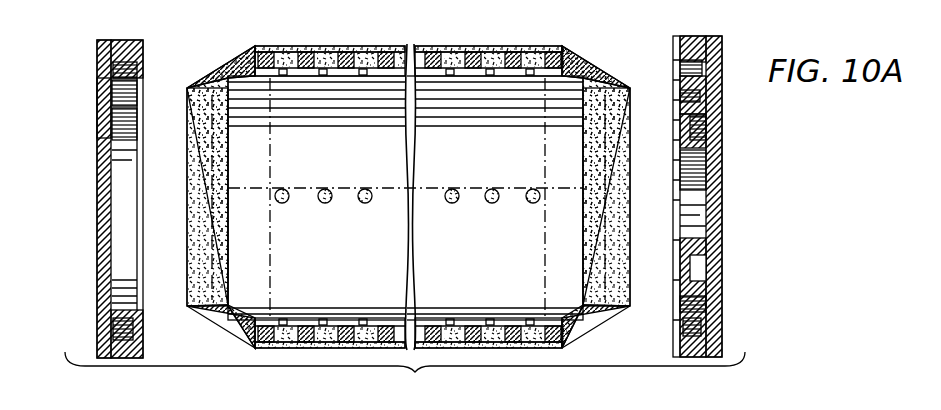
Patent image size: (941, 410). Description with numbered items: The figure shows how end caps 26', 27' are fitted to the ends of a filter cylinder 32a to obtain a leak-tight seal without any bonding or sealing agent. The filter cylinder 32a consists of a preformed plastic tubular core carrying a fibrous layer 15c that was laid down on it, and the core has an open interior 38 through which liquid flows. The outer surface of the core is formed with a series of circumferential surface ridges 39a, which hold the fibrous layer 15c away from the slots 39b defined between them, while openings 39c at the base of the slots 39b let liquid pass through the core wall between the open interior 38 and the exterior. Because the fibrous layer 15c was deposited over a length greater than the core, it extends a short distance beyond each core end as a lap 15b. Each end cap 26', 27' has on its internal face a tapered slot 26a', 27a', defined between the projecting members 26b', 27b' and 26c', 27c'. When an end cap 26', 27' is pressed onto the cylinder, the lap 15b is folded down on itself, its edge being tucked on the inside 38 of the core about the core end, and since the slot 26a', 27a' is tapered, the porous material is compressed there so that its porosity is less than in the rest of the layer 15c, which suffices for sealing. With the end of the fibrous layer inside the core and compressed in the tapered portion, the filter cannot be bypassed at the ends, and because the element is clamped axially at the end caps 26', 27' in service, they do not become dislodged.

The end cap 27' is at (86, 199).
The tapered slot 27a' is at (70, 108).
The projecting member 27b' is at (153, 44).
The projecting member 27c' is at (155, 79).
The end cap 26' is at (728, 186).
The tapered slot 26a' is at (735, 96).
The projecting member 26b' is at (693, 41).
The projecting member 26c' is at (734, 135).
The lap 15b is at (207, 312).
The fibrous layer 15c is at (432, 2).
The filter cylinder 32a is at (330, 2).
The open interior 38 is at (462, 154).
The circumferential surface ridges 39a is at (392, 2).
The slots 39b is at (495, 2).
The openings 39c is at (368, 190).